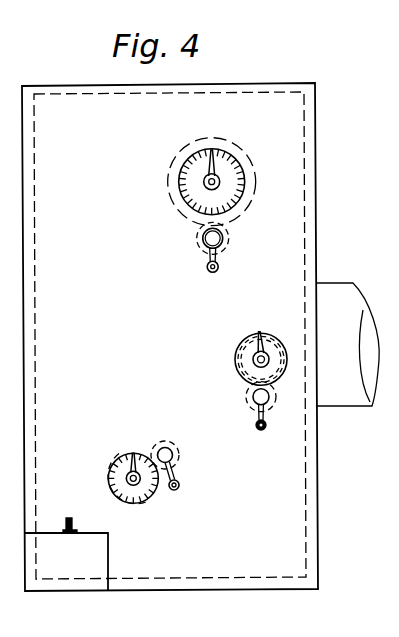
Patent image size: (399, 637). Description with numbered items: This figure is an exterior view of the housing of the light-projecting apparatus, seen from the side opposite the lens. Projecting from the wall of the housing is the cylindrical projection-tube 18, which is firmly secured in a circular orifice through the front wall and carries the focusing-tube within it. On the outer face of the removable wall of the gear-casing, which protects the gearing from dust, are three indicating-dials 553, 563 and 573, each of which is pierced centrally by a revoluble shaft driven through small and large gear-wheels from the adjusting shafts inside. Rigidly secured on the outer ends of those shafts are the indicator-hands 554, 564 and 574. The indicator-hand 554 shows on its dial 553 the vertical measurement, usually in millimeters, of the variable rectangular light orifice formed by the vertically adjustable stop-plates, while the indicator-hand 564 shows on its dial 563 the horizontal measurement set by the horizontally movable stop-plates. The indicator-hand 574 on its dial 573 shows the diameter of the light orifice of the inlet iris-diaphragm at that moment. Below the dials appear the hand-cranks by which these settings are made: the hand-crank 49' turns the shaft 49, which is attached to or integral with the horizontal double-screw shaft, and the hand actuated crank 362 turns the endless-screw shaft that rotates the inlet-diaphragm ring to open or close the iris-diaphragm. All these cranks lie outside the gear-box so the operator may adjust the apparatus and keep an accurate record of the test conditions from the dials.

The indicating-dial 553 is at (178, 175).
The indicator-hand 554 is at (215, 165).
The shaft 49 is at (236, 247).
The indicating-dial 563 is at (236, 359).
The indicator-hand 564 is at (260, 337).
The projection-tube 18 is at (348, 344).
The indicating-dial 573 is at (108, 479).
The indicator-hand 574 is at (132, 457).
The hand actuated crank 362 is at (178, 489).
The hand-crank 49' is at (208, 335).